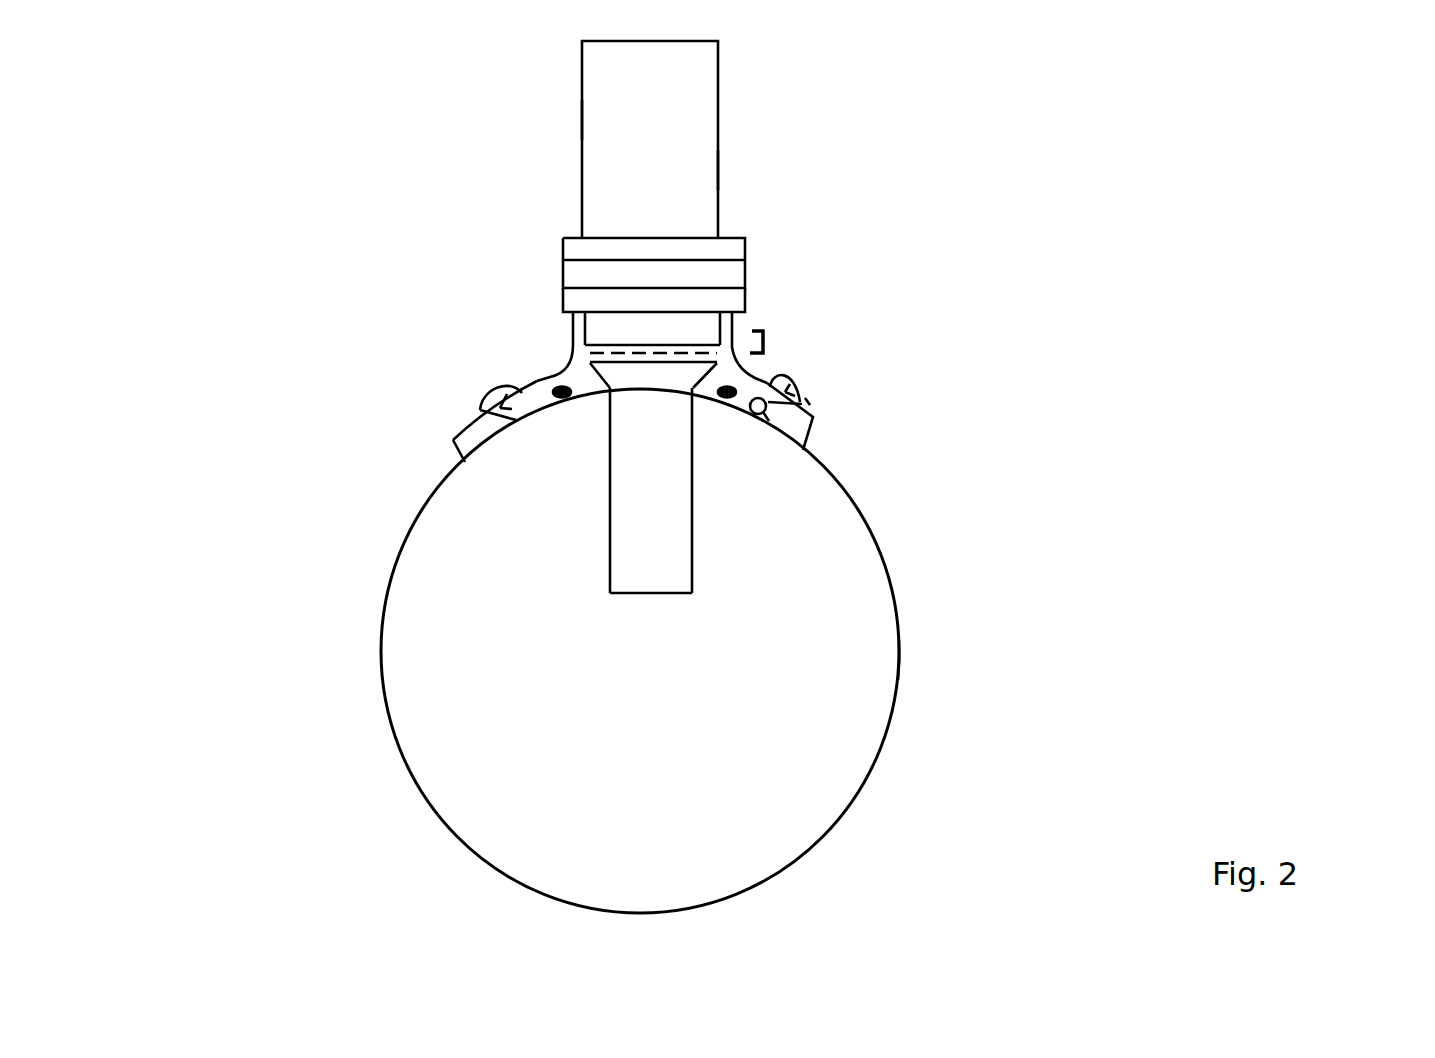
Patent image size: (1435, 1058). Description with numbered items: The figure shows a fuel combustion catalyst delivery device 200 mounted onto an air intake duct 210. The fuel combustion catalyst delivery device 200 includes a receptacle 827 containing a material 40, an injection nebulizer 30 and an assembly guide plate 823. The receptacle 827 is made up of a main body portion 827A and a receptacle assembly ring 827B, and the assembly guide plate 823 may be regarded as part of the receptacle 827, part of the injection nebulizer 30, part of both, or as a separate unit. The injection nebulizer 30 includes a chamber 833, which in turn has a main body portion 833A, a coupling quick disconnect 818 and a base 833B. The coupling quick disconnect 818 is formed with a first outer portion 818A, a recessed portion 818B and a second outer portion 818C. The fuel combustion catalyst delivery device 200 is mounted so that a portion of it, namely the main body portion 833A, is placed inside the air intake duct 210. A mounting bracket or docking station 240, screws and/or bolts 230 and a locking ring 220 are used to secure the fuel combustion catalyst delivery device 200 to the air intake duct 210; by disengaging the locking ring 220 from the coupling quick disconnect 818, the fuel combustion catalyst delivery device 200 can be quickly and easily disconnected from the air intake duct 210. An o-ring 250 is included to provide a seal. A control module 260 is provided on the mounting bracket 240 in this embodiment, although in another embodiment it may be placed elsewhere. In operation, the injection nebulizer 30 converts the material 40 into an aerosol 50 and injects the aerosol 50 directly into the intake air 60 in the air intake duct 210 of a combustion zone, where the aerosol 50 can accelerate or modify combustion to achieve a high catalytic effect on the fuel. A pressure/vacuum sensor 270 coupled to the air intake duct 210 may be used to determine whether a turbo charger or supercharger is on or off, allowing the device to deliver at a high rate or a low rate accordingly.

The receptacle 827 is at (722, 125).
The main body portion 827A is at (608, 118).
The material 40 is at (620, 170).
The receptacle assembly ring 827B is at (562, 247).
The assembly guide plate 823 is at (557, 275).
The base 833B is at (553, 298).
The coupling quick disconnect 818 is at (607, 332).
The first outer portion 818A is at (770, 338).
The recessed portion 818B is at (705, 352).
The second outer portion 818C is at (705, 333).
The locking ring 220 is at (764, 343).
The screws and/or bolts 230 is at (480, 397).
The o-ring 250 is at (800, 348).
The mounting bracket 240 is at (813, 410).
The control module 260 is at (815, 395).
The pressure/vacuum sensor 270 is at (753, 417).
The chamber 833 is at (698, 512).
The main body portion 833A is at (650, 557).
The injection nebulizer 30 is at (516, 477).
The air intake duct 210 is at (903, 670).
The aerosol 50 is at (668, 652).
The intake air 60 is at (808, 757).
The fuel combustion catalyst delivery device 200 is at (987, 172).